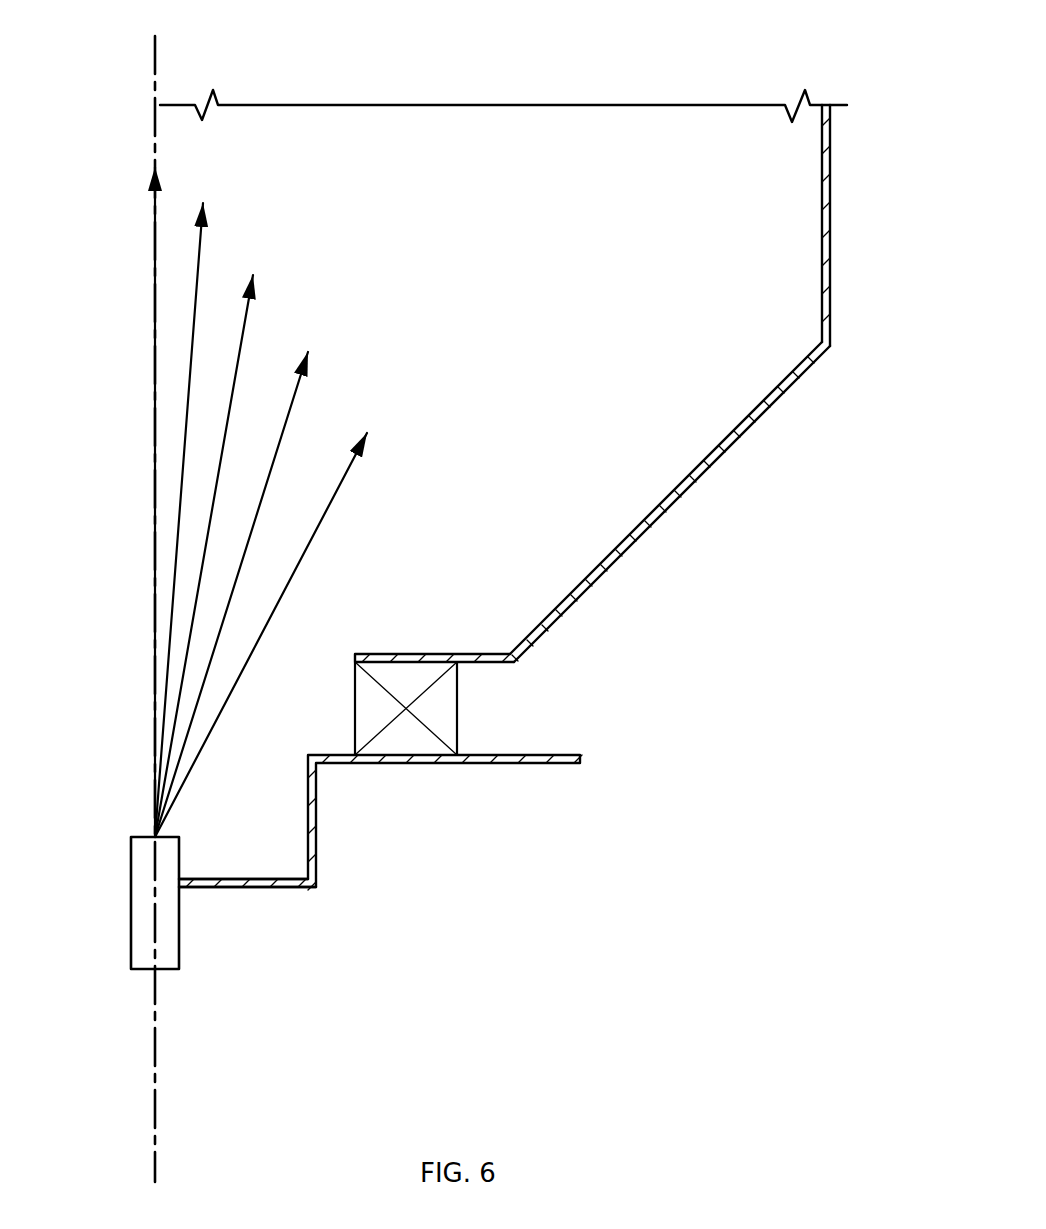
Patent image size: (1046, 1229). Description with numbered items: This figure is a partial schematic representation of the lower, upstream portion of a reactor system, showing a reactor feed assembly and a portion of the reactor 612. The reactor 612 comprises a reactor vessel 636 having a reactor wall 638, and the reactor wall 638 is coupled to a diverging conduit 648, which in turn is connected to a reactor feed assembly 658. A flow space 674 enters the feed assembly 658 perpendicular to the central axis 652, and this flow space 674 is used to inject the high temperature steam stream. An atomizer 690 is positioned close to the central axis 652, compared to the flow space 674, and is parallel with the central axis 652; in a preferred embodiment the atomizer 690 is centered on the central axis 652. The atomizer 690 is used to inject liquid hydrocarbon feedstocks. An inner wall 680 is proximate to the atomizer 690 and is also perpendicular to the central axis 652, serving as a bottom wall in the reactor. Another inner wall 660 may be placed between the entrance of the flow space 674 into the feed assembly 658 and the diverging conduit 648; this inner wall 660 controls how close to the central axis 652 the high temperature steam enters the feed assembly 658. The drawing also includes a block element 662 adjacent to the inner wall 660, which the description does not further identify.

The reactor 612 is at (357, 72).
The reactor vessel 636 is at (731, 383).
The reactor wall 638 is at (830, 255).
The diverging conduit 648 is at (708, 493).
The central axis 652 is at (153, 135).
The reactor feed assembly 658 is at (380, 865).
The inner wall 660 is at (476, 656).
The heat sink block 662 is at (366, 708).
The flow space 674 is at (530, 725).
The inner wall 680 is at (252, 903).
The atomizer 690 is at (130, 903).